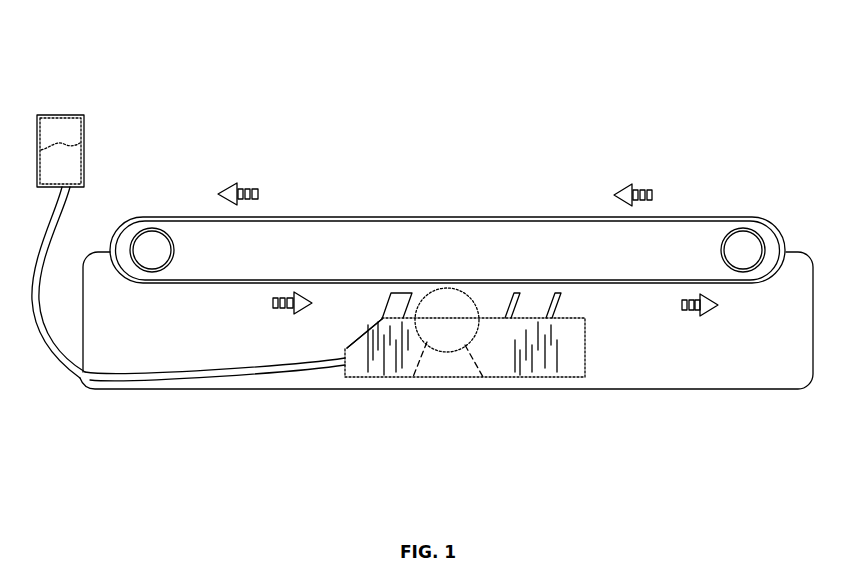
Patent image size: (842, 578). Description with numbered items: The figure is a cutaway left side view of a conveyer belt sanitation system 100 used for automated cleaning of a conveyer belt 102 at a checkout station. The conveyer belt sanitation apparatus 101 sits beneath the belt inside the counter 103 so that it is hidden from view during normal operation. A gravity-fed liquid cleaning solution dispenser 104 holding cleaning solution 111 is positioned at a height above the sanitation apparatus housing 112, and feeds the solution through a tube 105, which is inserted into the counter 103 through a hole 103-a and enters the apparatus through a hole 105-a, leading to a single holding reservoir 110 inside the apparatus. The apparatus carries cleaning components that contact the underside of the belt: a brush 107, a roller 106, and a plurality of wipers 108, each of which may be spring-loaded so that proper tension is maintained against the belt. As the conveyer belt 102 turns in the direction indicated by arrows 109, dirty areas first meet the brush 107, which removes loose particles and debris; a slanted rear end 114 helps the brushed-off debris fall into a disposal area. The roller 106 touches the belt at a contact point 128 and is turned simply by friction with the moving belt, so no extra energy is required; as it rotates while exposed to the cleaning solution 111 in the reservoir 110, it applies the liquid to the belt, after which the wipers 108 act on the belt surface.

The conveyer belt sanitation system 100 is at (188, 82).
The conveyer belt sanitation apparatus 101 is at (612, 343).
The conveyer belt 102 is at (517, 218).
The counter 103 is at (757, 393).
The hole in the counter 103-a is at (97, 363).
The liquid cleaning solution dispenser 104 is at (58, 115).
The tube 105 is at (66, 210).
The hole in the apparatus 105-a is at (347, 360).
The roller 106 is at (474, 303).
The brush 107 is at (382, 300).
The wipers 108 is at (546, 312).
The arrows 109 is at (635, 185).
The holding reservoir 110 is at (440, 370).
The cleaning solution 111 is at (68, 160).
The housing 112 is at (503, 377).
The slanted rear end 114 is at (358, 337).
The contact point 128 is at (437, 282).